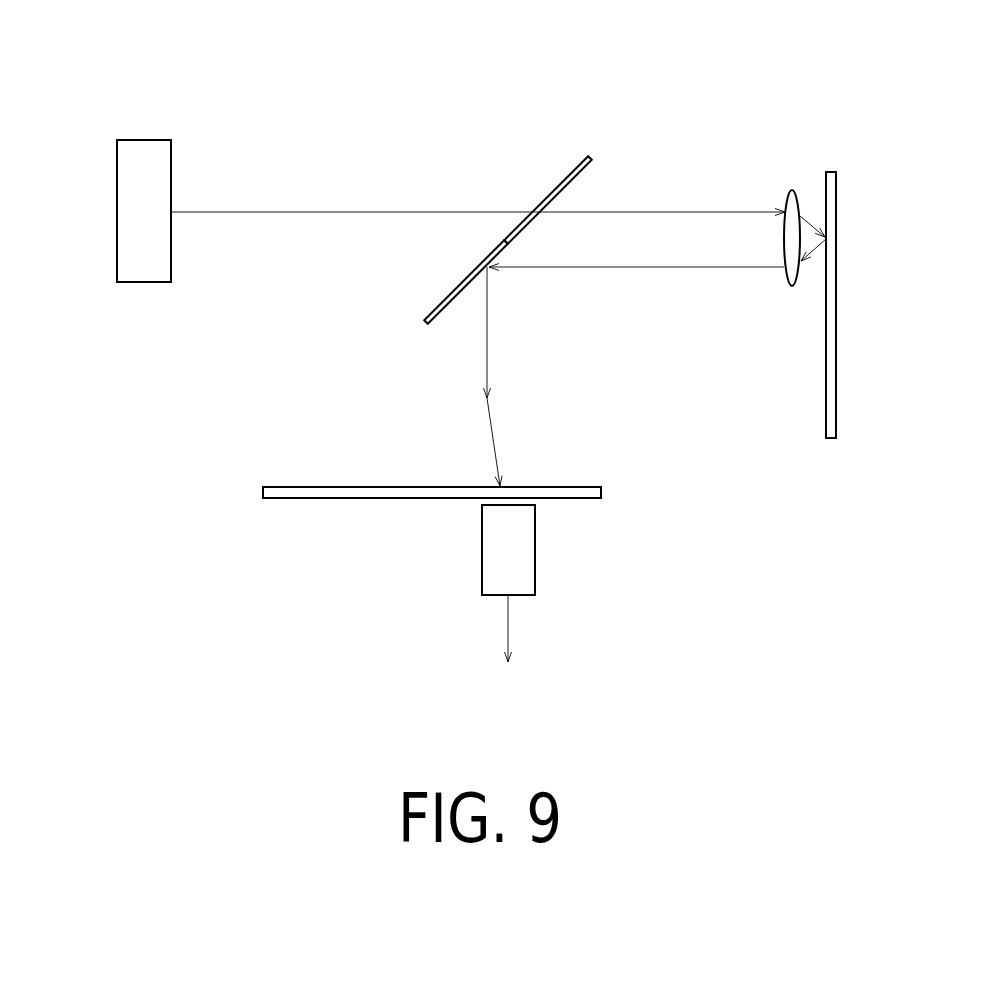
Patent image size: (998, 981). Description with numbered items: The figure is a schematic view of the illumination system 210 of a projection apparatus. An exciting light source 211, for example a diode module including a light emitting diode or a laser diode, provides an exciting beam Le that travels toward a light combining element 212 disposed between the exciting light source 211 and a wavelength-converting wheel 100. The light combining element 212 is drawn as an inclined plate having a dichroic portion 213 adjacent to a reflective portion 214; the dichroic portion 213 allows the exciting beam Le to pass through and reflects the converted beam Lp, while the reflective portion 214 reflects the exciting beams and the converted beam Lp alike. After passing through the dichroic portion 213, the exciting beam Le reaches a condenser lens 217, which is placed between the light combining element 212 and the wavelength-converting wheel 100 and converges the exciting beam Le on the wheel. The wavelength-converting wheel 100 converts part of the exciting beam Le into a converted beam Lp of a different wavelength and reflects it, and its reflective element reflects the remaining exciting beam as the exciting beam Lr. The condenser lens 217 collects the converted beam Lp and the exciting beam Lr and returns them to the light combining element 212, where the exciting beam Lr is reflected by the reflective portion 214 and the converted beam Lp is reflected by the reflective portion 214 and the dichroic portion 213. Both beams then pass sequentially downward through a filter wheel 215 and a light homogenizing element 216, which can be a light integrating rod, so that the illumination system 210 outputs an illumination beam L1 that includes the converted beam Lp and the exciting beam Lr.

The wavelength-converting wheel 100 is at (830, 330).
The illumination system 210 is at (833, 670).
The exciting light source 211 is at (145, 155).
The light combining element 212 is at (580, 65).
The dichroic portion 213 is at (558, 180).
The reflective portion 214 is at (465, 277).
The filter wheel 215 is at (337, 493).
The light homogenizing element 216 is at (520, 550).
The condenser lens 217 is at (808, 187).
The exciting beam Le is at (318, 212).
The converted beam Lp is at (640, 267).
The reflected exciting beam Lr is at (813, 238).
The illumination beam L1 is at (509, 622).